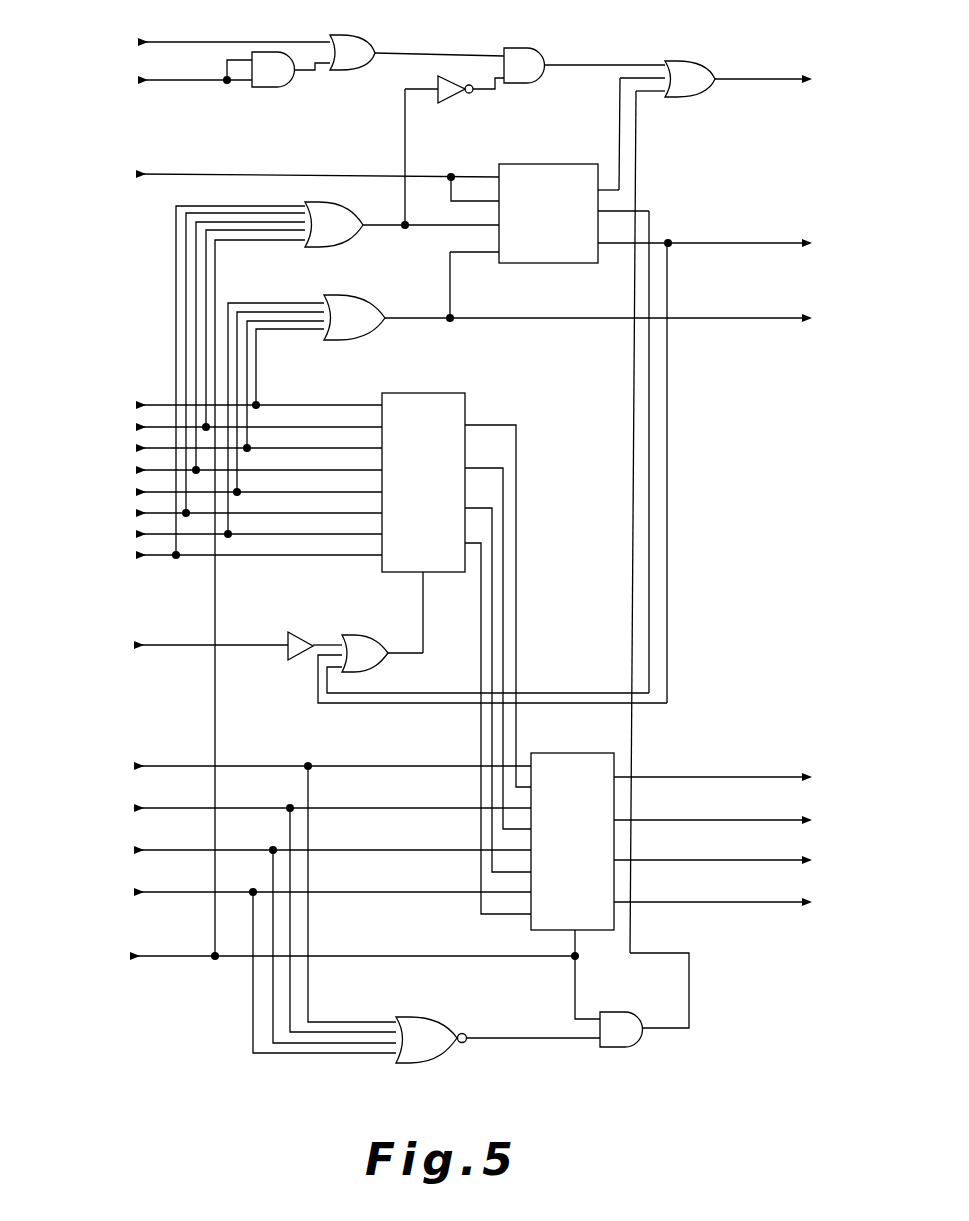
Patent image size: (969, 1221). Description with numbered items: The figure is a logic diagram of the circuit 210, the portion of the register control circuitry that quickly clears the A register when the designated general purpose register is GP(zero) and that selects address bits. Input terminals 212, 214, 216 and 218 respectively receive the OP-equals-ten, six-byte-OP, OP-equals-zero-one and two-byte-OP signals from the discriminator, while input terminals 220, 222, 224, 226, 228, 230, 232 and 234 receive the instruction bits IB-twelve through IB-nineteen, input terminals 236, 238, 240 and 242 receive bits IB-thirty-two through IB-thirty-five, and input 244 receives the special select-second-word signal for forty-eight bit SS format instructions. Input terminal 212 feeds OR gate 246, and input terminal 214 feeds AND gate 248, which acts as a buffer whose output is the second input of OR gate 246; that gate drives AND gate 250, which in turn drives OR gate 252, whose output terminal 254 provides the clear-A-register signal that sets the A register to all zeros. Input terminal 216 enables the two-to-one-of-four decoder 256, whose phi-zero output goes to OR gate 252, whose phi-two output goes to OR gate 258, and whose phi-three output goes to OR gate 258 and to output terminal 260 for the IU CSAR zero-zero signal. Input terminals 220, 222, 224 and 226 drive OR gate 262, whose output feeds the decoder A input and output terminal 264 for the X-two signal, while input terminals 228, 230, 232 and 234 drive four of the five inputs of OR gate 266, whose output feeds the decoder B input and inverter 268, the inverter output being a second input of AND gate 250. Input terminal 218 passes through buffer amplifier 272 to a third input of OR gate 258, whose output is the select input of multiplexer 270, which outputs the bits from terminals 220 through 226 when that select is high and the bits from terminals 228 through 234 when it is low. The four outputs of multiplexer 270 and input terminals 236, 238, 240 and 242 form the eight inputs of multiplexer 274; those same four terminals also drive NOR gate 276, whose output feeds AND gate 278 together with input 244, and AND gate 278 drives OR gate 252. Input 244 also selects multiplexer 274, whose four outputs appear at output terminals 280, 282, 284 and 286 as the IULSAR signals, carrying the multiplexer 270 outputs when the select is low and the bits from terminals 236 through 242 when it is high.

The circuit 210 is at (641, 1059).
The input terminal 212 is at (144, 41).
The input terminal 214 is at (144, 81).
The input terminal 216 is at (144, 173).
The input terminal 218 is at (137, 644).
The input terminal 220 is at (138, 401).
The input terminal 222 is at (138, 444).
The input terminal 224 is at (138, 488).
The input terminal 226 is at (138, 530).
The input terminal 228 is at (138, 423).
The input terminal 230 is at (138, 466).
The input terminal 232 is at (138, 509).
The input terminal 234 is at (138, 552).
The input terminal 236 is at (140, 762).
The input terminal 238 is at (140, 810).
The input terminal 240 is at (140, 852).
The input terminal 242 is at (140, 894).
The input 244 is at (137, 956).
The OR gate 246 is at (372, 39).
The AND gate 248 is at (284, 87).
The AND gate 250 is at (530, 86).
The OR gate 252 is at (696, 63).
The output terminal 254 is at (810, 73).
The 2 to 1 of 4 decoder 256 is at (562, 264).
The OR gate 258 is at (373, 636).
The output terminal 260 is at (806, 244).
The OR gate 262 is at (364, 297).
The output terminal 264 is at (806, 321).
The OR gate 266 is at (347, 245).
The inverter 268 is at (466, 106).
The multiplexer 270 is at (427, 393).
The buffer amplifier 272 is at (302, 633).
The multiplexer 274 is at (564, 753).
The NOR gate 276 is at (432, 1017).
The AND gate 278 is at (645, 1010).
The output terminal 280 is at (801, 776).
The output terminal 282 is at (801, 818).
The output terminal 284 is at (796, 859).
The output terminal 286 is at (796, 899).